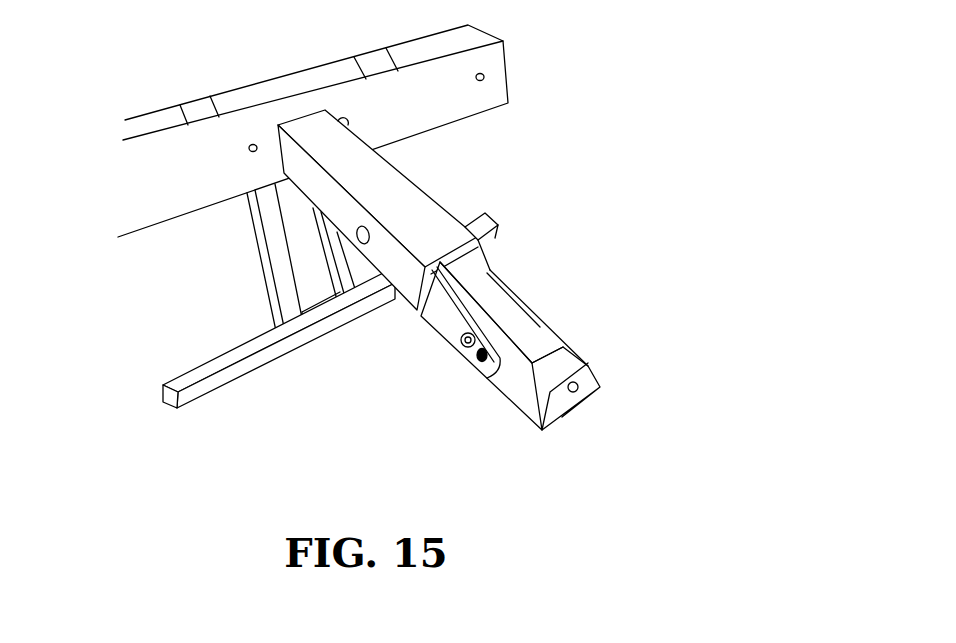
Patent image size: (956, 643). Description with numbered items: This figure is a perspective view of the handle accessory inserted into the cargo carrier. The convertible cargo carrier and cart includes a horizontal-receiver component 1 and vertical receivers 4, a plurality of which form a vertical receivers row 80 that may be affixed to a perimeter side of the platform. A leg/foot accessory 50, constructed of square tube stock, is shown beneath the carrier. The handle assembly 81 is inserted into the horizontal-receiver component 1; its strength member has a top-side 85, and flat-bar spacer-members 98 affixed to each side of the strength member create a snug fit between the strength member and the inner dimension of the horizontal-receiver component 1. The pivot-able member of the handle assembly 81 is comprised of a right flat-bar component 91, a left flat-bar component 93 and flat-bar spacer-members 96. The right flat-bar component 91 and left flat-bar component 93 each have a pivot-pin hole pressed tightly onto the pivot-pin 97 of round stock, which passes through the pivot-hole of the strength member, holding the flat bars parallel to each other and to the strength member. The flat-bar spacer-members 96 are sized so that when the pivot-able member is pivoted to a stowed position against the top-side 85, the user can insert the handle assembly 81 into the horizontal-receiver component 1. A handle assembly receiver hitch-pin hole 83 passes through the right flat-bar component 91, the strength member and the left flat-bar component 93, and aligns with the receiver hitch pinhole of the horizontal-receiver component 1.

The horizontal-receiver component 1 is at (435, 187).
The vertical receivers 4 is at (422, 66).
The leg/foot accessory 50 is at (247, 387).
The vertical receivers row 80 is at (518, 65).
The handle assembly 81 is at (497, 399).
The handle assembly receiver hitch-pin hole 83 is at (458, 338).
The top-side 85 is at (542, 328).
The right flat-bar component 91 is at (443, 312).
The left flat-bar component 93 is at (518, 335).
The flat-bar spacer-members 96 is at (497, 265).
The pivot-pin 97 is at (476, 356).
The flat-bar spacer-members 98 is at (563, 353).